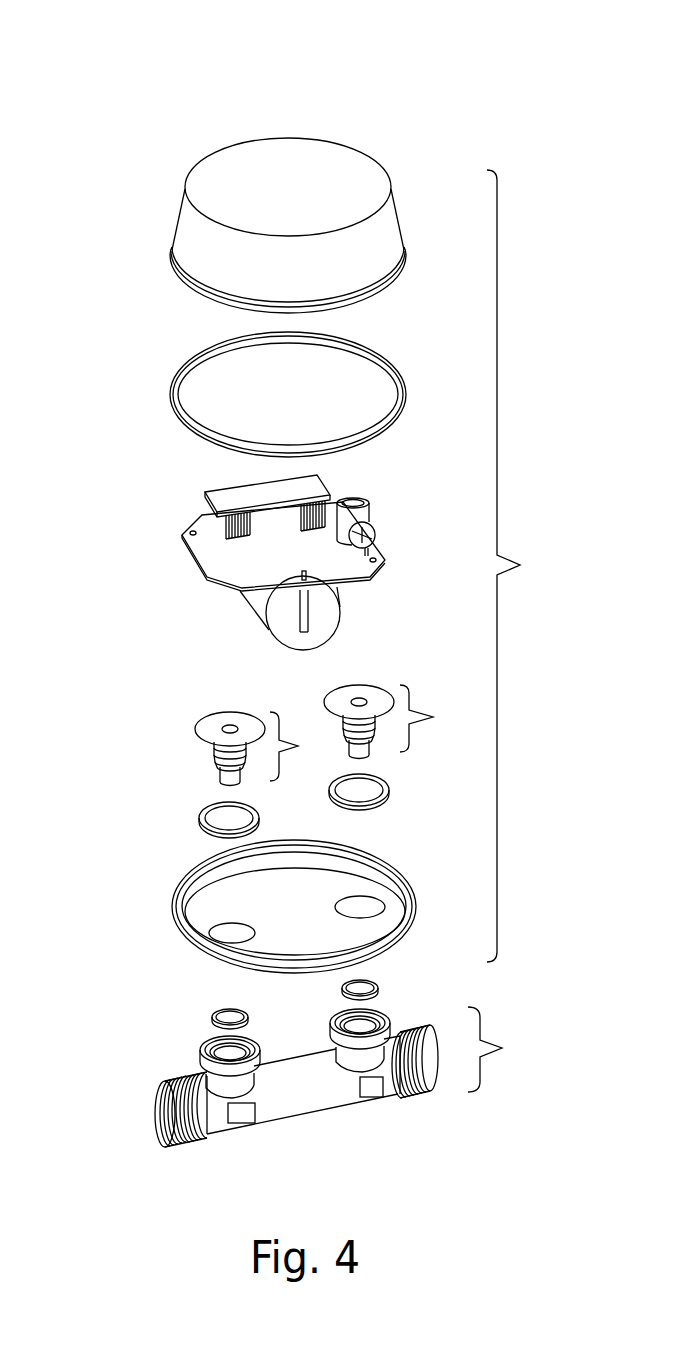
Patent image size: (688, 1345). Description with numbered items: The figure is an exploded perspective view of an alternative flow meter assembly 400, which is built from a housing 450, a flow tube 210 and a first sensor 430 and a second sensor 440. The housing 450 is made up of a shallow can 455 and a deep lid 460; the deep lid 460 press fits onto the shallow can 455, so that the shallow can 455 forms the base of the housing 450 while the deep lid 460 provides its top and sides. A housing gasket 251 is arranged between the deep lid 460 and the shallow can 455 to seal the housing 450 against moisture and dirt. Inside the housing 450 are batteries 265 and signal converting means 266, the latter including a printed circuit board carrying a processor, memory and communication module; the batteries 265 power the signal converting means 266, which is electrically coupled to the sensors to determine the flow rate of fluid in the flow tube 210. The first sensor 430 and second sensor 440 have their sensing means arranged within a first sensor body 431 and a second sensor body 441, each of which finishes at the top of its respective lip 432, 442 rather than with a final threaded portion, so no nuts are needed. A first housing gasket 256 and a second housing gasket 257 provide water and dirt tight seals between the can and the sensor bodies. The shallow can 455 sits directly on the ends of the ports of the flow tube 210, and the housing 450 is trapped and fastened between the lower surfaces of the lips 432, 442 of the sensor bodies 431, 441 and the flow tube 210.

The flow meter assembly 400 is at (500, 64).
The housing 450 is at (532, 566).
The deep lid 460 is at (175, 236).
The housing gasket 251 is at (172, 392).
The signal converting means 266 is at (178, 533).
The batteries 265 is at (270, 628).
The first sensor 430 is at (184, 727).
The lip of first sensor body 432 is at (200, 740).
The first sensor body 431 is at (300, 744).
The second sensor 440 is at (396, 681).
The lip of second sensor body 442 is at (388, 690).
The second sensor body 441 is at (445, 718).
The first housing gasket 256 is at (199, 822).
The second housing gasket 257 is at (389, 793).
The shallow can 455 is at (183, 932).
The flow tube 210 is at (356, 1063).